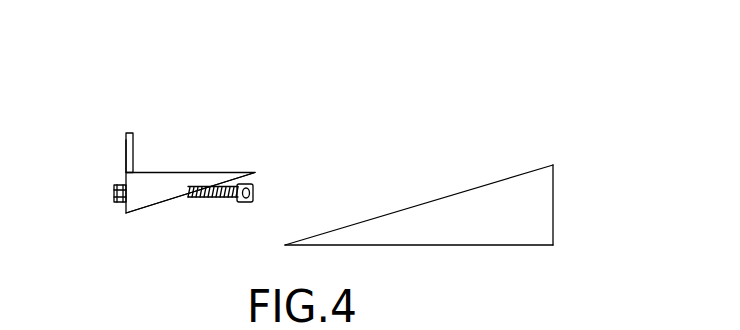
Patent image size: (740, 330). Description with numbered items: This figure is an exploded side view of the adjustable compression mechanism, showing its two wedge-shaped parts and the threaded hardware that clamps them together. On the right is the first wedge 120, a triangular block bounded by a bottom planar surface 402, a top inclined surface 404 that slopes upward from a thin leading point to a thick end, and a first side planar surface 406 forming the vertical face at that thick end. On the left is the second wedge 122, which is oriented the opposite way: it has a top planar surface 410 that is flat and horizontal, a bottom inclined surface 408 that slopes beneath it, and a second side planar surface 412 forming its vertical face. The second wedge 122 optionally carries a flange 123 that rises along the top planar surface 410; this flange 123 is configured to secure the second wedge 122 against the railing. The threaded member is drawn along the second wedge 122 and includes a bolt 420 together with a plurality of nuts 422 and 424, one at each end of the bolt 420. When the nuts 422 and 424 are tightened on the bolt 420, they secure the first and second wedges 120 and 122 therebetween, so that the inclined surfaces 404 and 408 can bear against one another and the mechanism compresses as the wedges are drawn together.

The first wedge 120 is at (496, 108).
The second wedge 122 is at (196, 76).
The flange 123 is at (129, 133).
The bottom planar surface 402 is at (423, 246).
The top inclined surface 404 is at (463, 190).
The first side planar surface 406 is at (553, 208).
The bottom inclined surface 408 is at (150, 206).
The top planar surface 410 is at (188, 172).
The second side planar surface 412 is at (126, 153).
The bolt 420 is at (216, 198).
The nut 422 is at (254, 185).
The nut 424 is at (113, 192).